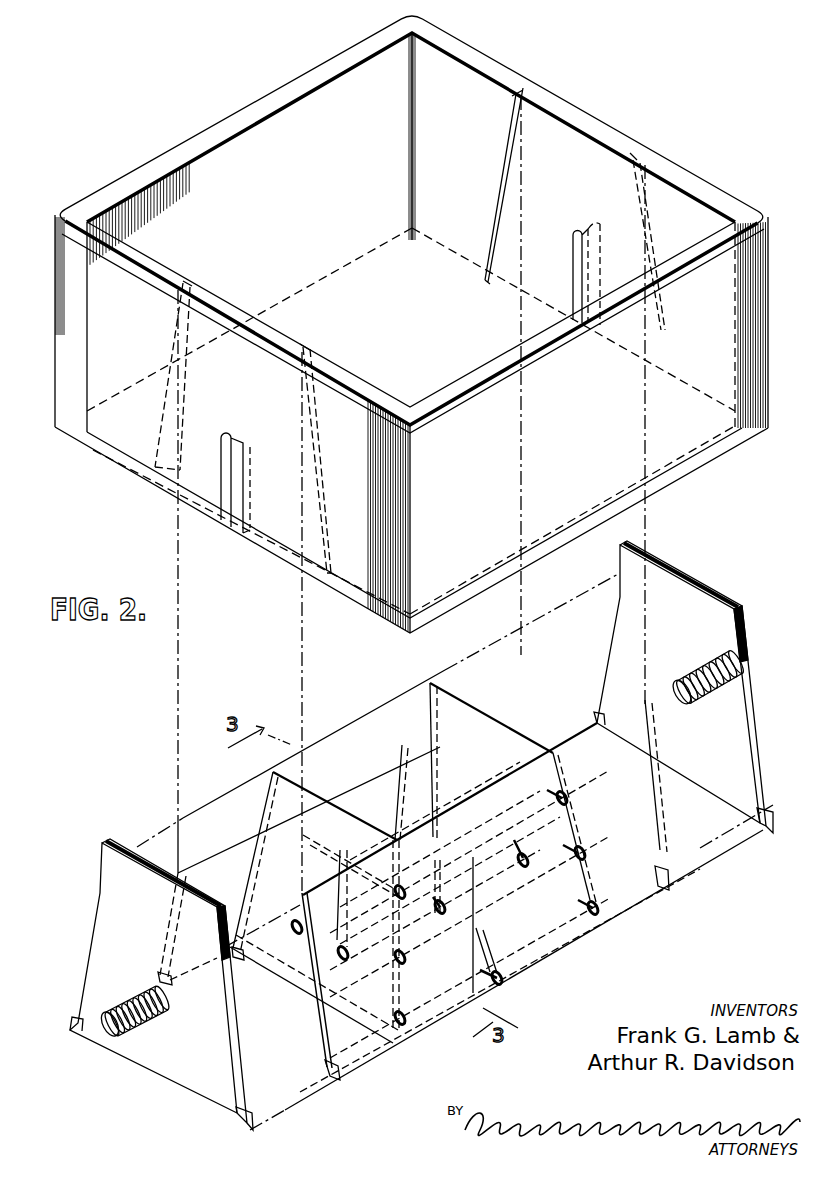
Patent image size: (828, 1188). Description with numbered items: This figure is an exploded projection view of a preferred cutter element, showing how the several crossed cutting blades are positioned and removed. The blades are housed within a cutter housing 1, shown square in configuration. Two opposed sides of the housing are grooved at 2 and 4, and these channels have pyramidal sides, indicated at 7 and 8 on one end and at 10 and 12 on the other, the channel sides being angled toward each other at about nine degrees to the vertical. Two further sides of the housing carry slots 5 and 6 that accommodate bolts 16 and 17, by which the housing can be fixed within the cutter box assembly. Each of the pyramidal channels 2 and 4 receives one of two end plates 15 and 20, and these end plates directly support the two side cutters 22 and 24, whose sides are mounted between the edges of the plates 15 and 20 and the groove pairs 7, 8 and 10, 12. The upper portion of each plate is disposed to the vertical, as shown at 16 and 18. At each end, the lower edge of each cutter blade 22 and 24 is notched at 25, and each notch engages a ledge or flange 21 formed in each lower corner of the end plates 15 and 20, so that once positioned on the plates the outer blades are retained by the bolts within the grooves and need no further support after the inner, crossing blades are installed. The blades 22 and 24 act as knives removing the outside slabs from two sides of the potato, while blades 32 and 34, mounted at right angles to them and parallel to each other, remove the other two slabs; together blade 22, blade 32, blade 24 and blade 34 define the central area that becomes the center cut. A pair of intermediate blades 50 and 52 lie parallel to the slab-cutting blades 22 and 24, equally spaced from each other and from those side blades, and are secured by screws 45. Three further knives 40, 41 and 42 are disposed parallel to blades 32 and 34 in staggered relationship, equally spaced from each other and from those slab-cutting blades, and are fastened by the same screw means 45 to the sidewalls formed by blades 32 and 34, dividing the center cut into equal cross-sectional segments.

The cutter housing 1 is at (507, 74).
The groove 2 is at (275, 338).
The groove 4 is at (563, 126).
The slot 5 is at (222, 467).
The slot 6 is at (577, 262).
The pyramidal side 7 is at (190, 284).
The pyramidal side 8 is at (307, 347).
The pyramidal side 10 is at (500, 165).
The pyramidal side 12 is at (633, 153).
The end plate 15 is at (137, 925).
The bolt 16 is at (717, 695).
The bolt 17 is at (140, 1018).
The upper portion of end plate 18 is at (742, 623).
The end plate 20 is at (692, 630).
The ledge or flange 21 is at (77, 1020).
The side cutter blade 22 is at (233, 803).
The side cutter blade 24 is at (647, 818).
The notch 25 is at (330, 1078).
The cutter blade 32 is at (575, 828).
The cutter blade 34 is at (278, 973).
The blade 40 is at (300, 860).
The blade 41 is at (497, 953).
The blade 42 is at (405, 755).
The screw 45 is at (343, 960).
The intermediate blade 50 is at (407, 830).
The intermediate blade 52 is at (483, 880).